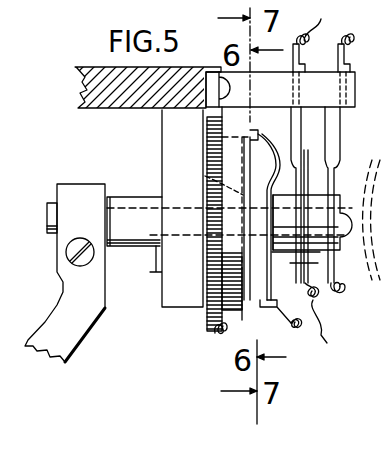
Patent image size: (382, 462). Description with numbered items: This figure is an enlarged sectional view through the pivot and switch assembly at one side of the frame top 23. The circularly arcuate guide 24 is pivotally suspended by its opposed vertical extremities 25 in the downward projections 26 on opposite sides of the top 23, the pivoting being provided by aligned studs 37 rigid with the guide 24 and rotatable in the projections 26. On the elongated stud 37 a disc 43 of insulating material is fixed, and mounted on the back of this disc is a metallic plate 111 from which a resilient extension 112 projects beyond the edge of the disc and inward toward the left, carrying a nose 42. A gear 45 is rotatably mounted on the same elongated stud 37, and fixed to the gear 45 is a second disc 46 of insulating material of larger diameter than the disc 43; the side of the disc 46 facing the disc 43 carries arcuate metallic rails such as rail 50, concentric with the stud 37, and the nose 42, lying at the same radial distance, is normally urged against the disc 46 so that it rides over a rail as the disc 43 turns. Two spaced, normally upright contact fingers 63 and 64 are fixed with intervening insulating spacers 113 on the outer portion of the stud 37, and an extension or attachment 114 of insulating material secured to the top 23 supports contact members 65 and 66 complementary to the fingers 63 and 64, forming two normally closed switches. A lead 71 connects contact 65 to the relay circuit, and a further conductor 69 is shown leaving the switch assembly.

The top 23 is at (84, 80).
The circularly arcuate guide 24 is at (68, 341).
The opposed vertical extremities 25 is at (75, 190).
The downward projections 26 is at (167, 274).
The stud 37 is at (128, 217).
The nose 42 is at (246, 137).
The disc of insulating material 43 is at (268, 200).
The gear 45 is at (196, 336).
The second disc of insulating material 46 is at (228, 155).
The circularly arcuate metallic segment or rail 50 is at (203, 173).
The contact finger 63 is at (309, 163).
The contact finger 64 is at (326, 182).
The contact member 65 is at (300, 59).
The contact member 66 is at (350, 58).
The lead wire 69 is at (324, 318).
The lead 71 is at (314, 22).
The metallic plate 111 is at (253, 287).
The resilient extension 112 is at (258, 150).
The insulating spacers 113 is at (287, 252).
The extension or attachment of insulating material 114 is at (348, 88).